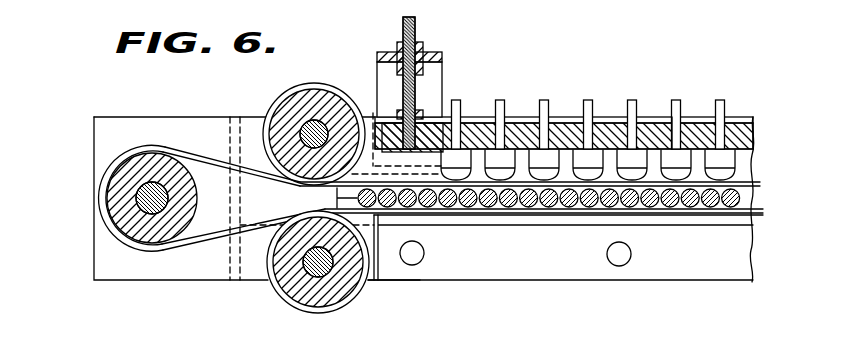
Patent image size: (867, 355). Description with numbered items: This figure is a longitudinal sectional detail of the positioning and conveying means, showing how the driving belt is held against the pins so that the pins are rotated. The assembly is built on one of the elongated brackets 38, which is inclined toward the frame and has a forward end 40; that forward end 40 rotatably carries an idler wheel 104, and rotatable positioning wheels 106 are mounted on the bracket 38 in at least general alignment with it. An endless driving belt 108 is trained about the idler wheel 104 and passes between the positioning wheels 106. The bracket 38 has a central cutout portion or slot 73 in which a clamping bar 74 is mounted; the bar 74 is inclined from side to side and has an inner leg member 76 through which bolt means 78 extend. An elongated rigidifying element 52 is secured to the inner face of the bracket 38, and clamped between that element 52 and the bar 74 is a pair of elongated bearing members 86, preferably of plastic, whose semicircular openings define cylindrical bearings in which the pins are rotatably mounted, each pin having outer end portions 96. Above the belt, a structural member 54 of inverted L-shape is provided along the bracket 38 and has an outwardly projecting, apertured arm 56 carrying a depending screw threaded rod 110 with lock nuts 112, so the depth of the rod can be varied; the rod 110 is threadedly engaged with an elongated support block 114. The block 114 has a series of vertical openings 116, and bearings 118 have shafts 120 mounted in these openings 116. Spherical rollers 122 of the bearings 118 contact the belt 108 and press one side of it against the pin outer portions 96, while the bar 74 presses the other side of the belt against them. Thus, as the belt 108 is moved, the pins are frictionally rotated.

The elongated bracket 38 is at (200, 130).
The forward end 40 is at (168, 270).
The rigidifying element 52 is at (373, 113).
The structural member 54 is at (437, 87).
The apertured arm 56 is at (442, 57).
The central cutout portion or slot 73 is at (387, 280).
The clamping bar 74 is at (502, 217).
The inner leg member 76 is at (563, 270).
The bolt means 78 is at (628, 264).
The bearing member 86 is at (352, 209).
The outer end portion 96 is at (733, 207).
The idler wheel 104 is at (120, 222).
The positioning wheel 106 is at (310, 298).
The endless driving belt 108 is at (153, 147).
The screw threaded rod 110 is at (415, 27).
The lock nut 112 is at (423, 43).
The support block 114 is at (524, 117).
The vertical opening 116 is at (632, 100).
The bearing 118 is at (684, 155).
The shaft 120 is at (683, 112).
The spherical roller 122 is at (735, 176).